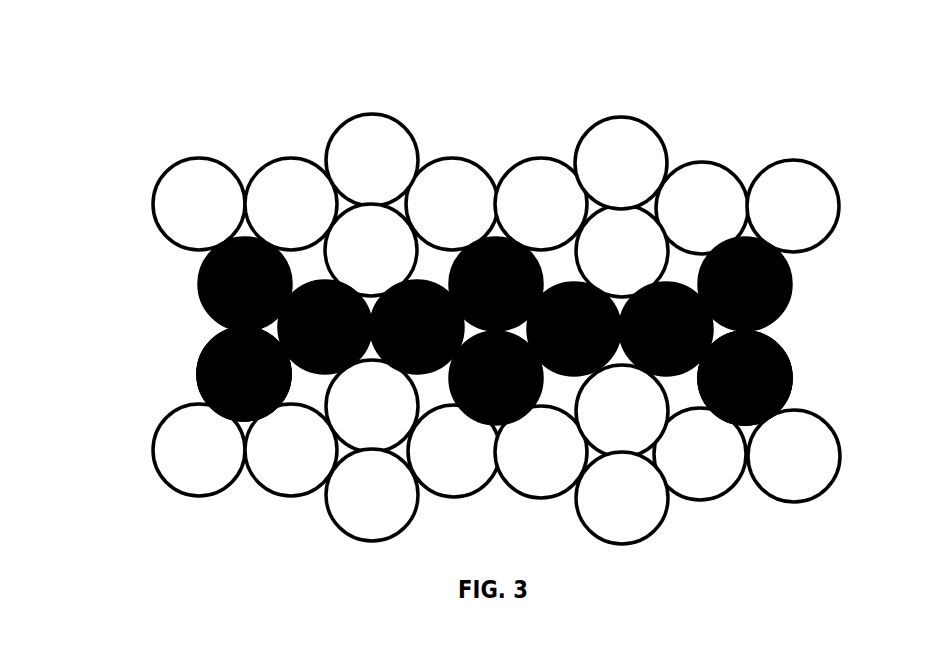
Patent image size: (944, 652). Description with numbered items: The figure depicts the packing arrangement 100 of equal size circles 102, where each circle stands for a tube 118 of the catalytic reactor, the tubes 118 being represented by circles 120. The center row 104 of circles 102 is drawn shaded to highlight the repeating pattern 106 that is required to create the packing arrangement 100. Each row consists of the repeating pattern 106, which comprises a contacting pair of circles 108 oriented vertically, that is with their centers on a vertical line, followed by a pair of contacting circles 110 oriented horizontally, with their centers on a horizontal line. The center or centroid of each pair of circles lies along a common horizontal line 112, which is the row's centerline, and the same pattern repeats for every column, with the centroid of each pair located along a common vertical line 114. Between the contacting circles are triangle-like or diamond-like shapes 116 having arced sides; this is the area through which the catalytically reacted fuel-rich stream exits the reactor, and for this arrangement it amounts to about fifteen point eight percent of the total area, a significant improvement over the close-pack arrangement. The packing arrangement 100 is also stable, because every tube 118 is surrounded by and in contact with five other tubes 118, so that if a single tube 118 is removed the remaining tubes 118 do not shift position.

The packing arrangement 100 is at (635, 78).
The equal size circles 102 is at (662, 135).
The center row 104 is at (817, 323).
The repeating pattern 106 is at (202, 262).
The contacting pair of circles oriented vertically 108 is at (202, 385).
The pair of contacting circles oriented horizontally 110 is at (215, 338).
The common horizontal line 112 is at (417, 363).
The common vertical line 114 is at (279, 405).
The triangle-like or diamond-like shapes 116 is at (676, 386).
The tube 118 is at (793, 378).
The circles 120 is at (790, 395).